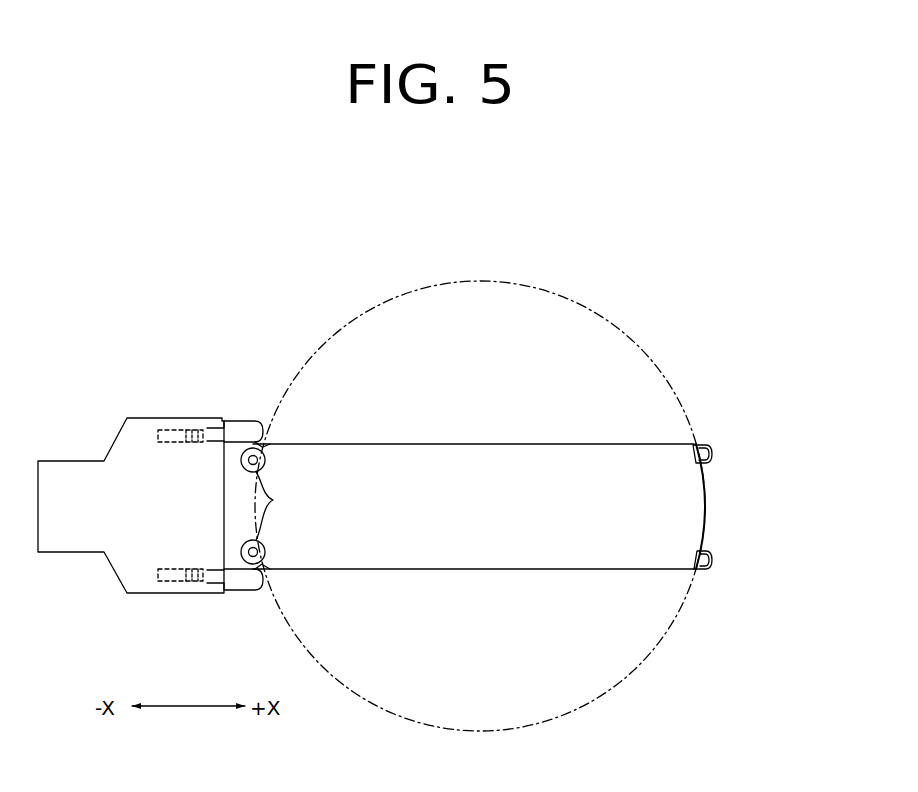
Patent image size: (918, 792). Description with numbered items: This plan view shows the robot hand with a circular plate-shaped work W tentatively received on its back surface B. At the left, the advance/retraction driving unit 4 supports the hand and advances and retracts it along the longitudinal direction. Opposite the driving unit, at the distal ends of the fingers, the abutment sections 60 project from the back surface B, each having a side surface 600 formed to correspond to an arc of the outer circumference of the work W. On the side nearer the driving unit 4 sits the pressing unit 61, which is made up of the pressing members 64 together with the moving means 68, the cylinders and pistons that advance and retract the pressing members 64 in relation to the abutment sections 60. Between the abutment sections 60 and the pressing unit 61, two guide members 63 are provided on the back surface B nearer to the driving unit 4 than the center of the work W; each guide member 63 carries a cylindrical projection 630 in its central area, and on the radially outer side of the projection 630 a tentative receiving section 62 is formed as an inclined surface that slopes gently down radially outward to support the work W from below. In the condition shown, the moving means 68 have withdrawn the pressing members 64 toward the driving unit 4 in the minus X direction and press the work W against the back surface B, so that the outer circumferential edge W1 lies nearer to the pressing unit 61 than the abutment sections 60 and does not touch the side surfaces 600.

The advance/retraction driving unit 4 is at (124, 412).
The moving means 68 is at (175, 418).
The pressing unit 61 is at (226, 416).
The pressing member 64 is at (257, 432).
The tentative receiving section 62 is at (266, 460).
The guide member 63 is at (276, 448).
The projection 630 is at (274, 500).
The back surface B is at (368, 452).
The plate-shaped work W is at (606, 311).
The outer circumferential edge W1 is at (705, 477).
The abutment section 60 is at (706, 445).
The side surface 600 is at (694, 446).